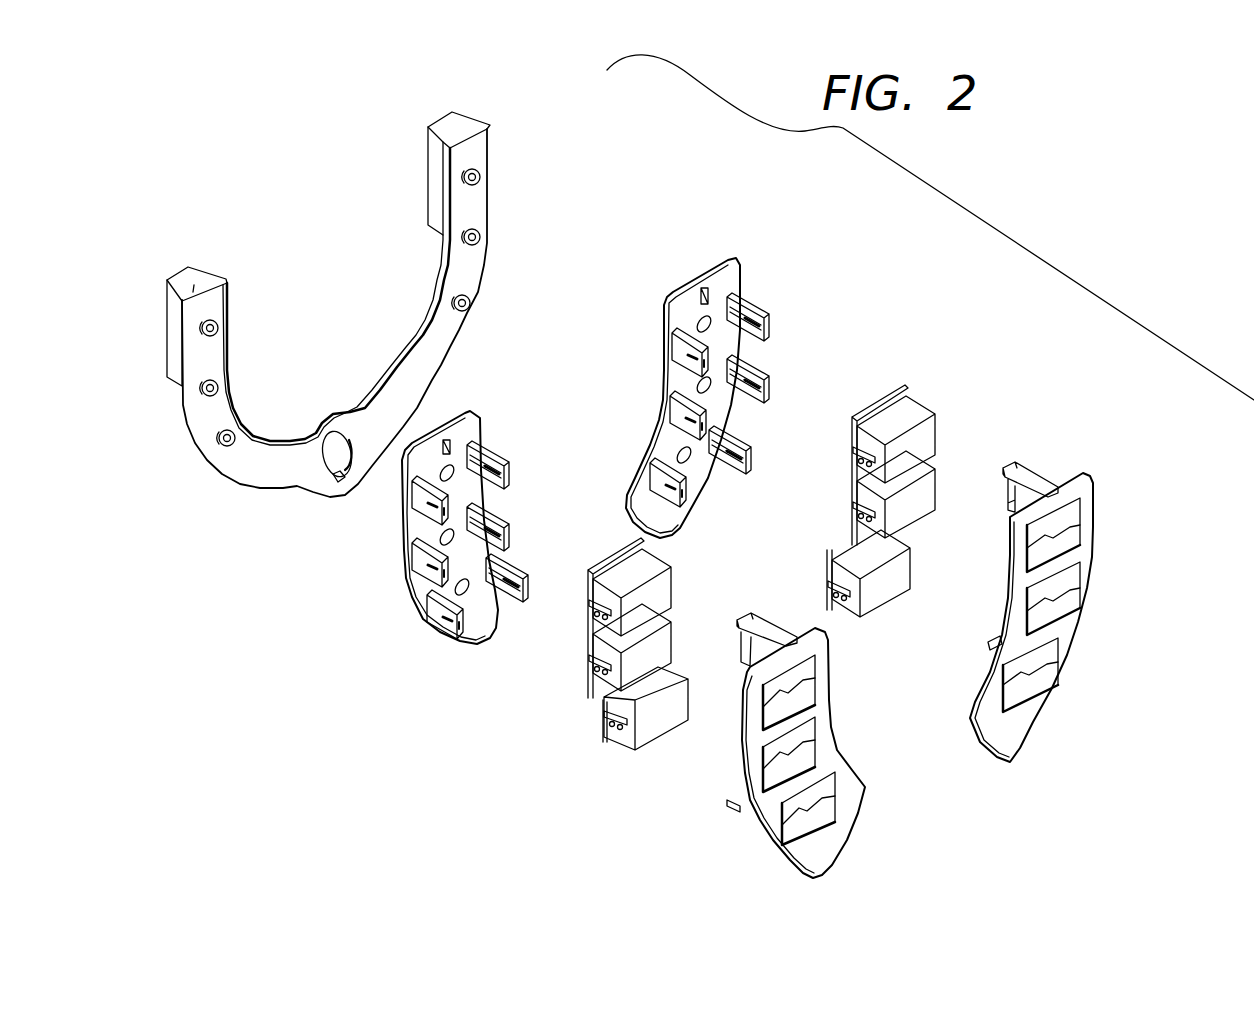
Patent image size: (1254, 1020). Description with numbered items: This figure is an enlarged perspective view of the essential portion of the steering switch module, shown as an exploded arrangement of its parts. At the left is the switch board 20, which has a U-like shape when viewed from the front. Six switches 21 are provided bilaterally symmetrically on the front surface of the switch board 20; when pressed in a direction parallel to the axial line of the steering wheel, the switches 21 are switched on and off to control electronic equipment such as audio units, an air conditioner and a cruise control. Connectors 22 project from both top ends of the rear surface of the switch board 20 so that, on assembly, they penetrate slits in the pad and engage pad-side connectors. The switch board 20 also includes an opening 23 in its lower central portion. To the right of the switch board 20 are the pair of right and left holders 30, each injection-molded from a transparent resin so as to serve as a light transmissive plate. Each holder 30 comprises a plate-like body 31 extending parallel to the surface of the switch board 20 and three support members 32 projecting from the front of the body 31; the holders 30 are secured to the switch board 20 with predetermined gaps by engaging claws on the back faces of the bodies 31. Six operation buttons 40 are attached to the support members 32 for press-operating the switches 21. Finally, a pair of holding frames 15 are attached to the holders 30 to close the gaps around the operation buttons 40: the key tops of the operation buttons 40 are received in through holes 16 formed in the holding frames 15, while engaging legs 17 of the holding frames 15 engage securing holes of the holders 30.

The holding frame 15 is at (927, 648).
The through hole 16 is at (1067, 525).
The engaging leg 17 is at (1092, 476).
The switch board 20 is at (356, 286).
The switch 21 is at (482, 177).
The connector 22 is at (434, 165).
The hole 23 is at (337, 458).
The holder 30 is at (580, 437).
The body 31 is at (677, 308).
The support member 32 is at (675, 348).
The operation button 40 is at (925, 398).